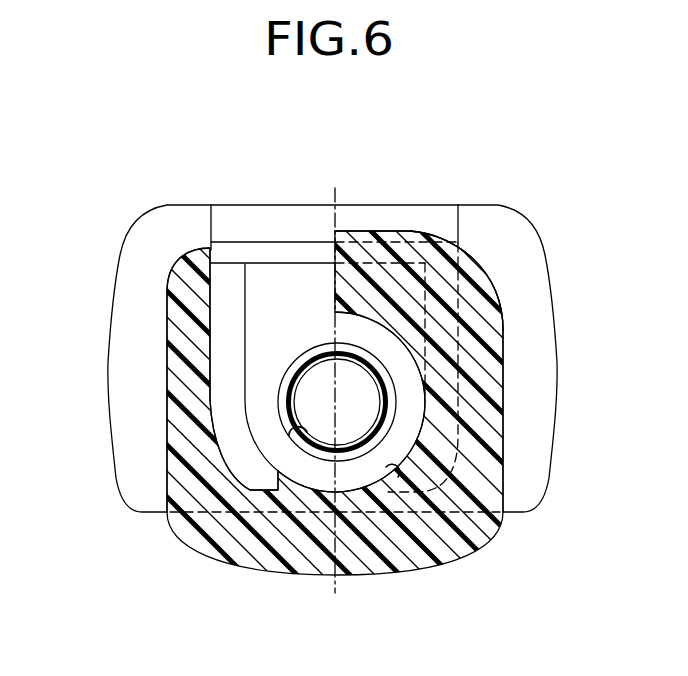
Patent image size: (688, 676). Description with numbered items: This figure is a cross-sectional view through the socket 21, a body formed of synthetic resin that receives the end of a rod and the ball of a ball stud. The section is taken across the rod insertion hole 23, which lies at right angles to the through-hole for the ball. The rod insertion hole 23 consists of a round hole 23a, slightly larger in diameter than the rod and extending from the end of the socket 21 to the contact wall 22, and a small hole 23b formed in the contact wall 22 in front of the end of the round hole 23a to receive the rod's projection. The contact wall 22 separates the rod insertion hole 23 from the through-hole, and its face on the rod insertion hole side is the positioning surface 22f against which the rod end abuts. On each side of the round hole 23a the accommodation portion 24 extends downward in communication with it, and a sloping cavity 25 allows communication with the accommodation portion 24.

The socket 21 is at (540, 358).
The contact wall 22 is at (294, 285).
The positioning surface 22f is at (271, 426).
The rod insertion hole 23 is at (353, 474).
The round hole 23a is at (392, 488).
The small hole 23b is at (291, 433).
The accommodation portion 24 is at (227, 347).
The cavity 25 is at (350, 231).